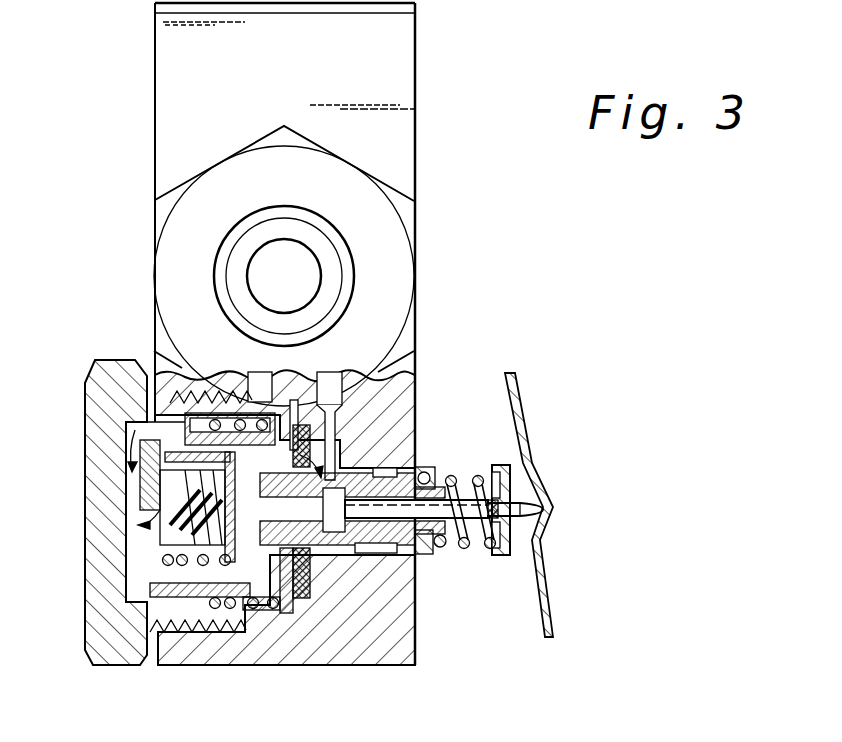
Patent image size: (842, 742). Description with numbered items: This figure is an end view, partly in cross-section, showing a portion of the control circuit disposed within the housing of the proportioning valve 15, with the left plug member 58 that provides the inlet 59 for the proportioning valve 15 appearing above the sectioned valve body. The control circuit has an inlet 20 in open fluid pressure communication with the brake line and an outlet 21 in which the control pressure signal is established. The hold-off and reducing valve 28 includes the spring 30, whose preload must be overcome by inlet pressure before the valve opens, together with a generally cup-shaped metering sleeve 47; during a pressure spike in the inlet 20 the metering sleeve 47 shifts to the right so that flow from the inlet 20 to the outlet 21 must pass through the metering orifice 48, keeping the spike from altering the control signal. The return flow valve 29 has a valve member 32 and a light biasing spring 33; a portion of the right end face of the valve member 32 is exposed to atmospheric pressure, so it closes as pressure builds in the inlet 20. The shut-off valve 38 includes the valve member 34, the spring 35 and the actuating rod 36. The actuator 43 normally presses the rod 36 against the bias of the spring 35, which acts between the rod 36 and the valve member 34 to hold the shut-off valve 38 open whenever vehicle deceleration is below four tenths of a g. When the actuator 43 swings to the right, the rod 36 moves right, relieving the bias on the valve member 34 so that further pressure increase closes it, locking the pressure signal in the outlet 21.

The proportioning valve 15 is at (397, 55).
The left plug member 58 is at (183, 227).
The inlet 59 is at (310, 273).
The inlet 20 is at (259, 388).
The outlet 21 is at (327, 388).
The return flow valve 29 is at (300, 410).
The light biasing spring 33 is at (285, 412).
The valve member 34 is at (333, 473).
The metering sleeve 47 is at (116, 512).
The hold-off and reducing valve 28 is at (145, 478).
The metering orifice 48 is at (160, 592).
The spring 30 is at (286, 611).
The valve member 32 is at (258, 622).
The shut-off valve 38 is at (318, 568).
The actuating rod 36 is at (540, 503).
The spring 35 is at (463, 549).
The actuator 43 is at (522, 403).